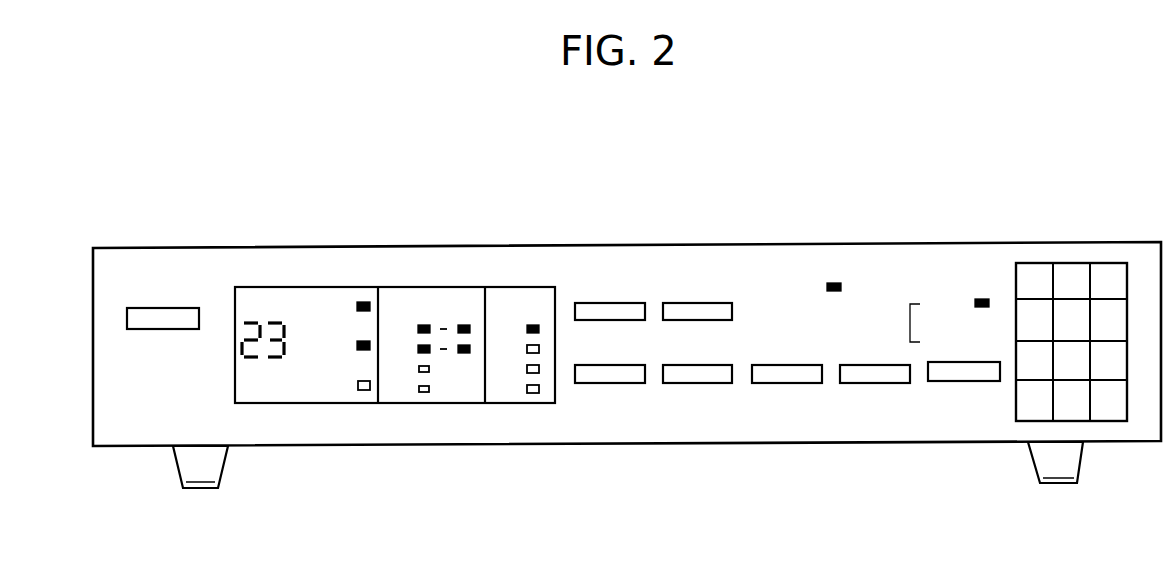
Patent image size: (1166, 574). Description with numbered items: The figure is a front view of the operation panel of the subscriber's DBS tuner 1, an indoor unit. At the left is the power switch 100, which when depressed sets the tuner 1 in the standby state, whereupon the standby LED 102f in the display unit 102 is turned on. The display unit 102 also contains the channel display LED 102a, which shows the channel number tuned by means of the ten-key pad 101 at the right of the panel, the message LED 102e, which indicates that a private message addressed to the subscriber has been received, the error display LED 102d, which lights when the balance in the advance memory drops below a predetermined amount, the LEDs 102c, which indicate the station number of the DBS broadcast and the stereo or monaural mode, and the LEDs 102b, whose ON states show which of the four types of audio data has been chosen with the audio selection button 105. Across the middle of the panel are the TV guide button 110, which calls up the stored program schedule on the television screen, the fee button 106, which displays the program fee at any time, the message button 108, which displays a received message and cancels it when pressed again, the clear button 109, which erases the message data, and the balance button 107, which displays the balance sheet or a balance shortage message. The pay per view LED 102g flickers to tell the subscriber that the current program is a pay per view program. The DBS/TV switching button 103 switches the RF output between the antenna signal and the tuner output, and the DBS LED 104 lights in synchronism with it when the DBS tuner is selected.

The DBS tuner 1 is at (832, 246).
The power switch 100 is at (155, 322).
The ten-key pad 101 is at (1100, 419).
The display unit 102 is at (424, 352).
The channel display LED 102a is at (260, 404).
The audio selection LEDs 102b is at (516, 292).
The station number and stereo/monaural LEDs 102c is at (437, 293).
The error display LED 102d is at (370, 345).
The message LED 102e is at (360, 306).
The standby LED 102f is at (365, 391).
The pay per view LED 102g is at (845, 287).
The DBS/TV switching button 103 is at (970, 373).
The DBS LED 104 is at (990, 303).
The audio selection button 105 is at (578, 371).
The fee button 106 is at (722, 316).
The balance button 107 is at (904, 371).
The message button 108 is at (724, 371).
The clear button 109 is at (810, 371).
The TV guide button 110 is at (640, 316).